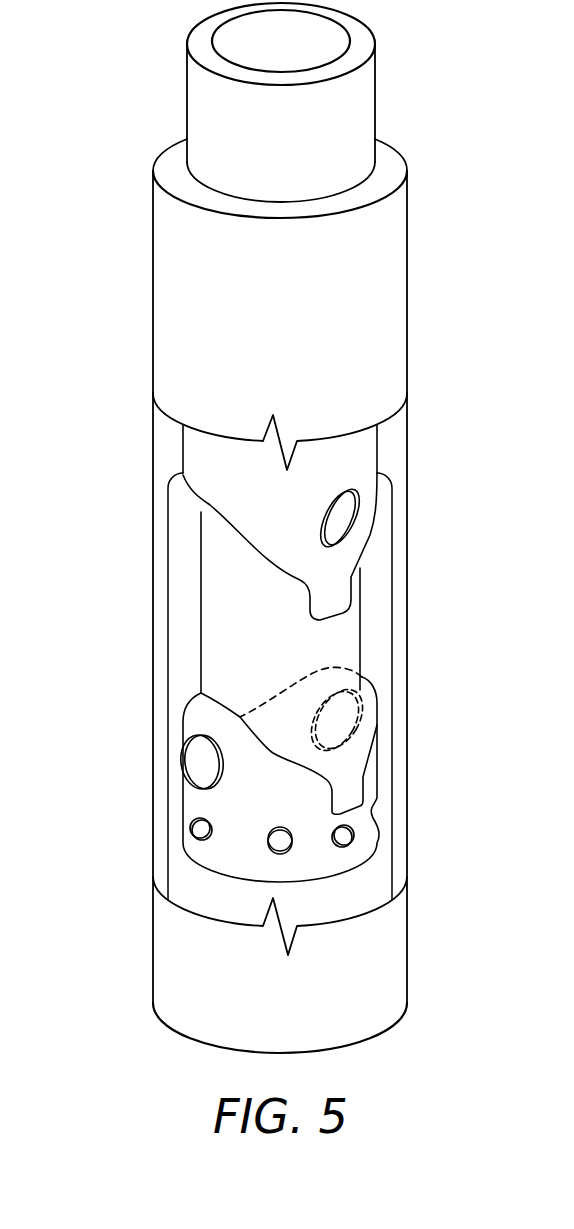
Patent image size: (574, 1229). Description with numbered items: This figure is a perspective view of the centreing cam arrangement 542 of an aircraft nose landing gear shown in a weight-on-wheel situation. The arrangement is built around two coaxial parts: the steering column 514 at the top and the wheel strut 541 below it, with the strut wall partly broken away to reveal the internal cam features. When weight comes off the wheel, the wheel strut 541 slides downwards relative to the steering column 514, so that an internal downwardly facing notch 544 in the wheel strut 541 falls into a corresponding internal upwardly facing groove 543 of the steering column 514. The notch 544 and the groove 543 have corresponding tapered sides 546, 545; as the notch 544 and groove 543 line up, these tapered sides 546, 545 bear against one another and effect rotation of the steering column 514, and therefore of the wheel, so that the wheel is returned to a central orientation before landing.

The centreing cam arrangement 542 is at (257, 528).
The steering column 514 is at (375, 89).
The wheel strut 541 is at (397, 957).
The internal downwardly facing notch 544 is at (335, 595).
The tapered sides of the notch 546 is at (255, 548).
The internal upwardly facing groove 543 is at (284, 774).
The tapered sides of the groove 545 is at (195, 763).